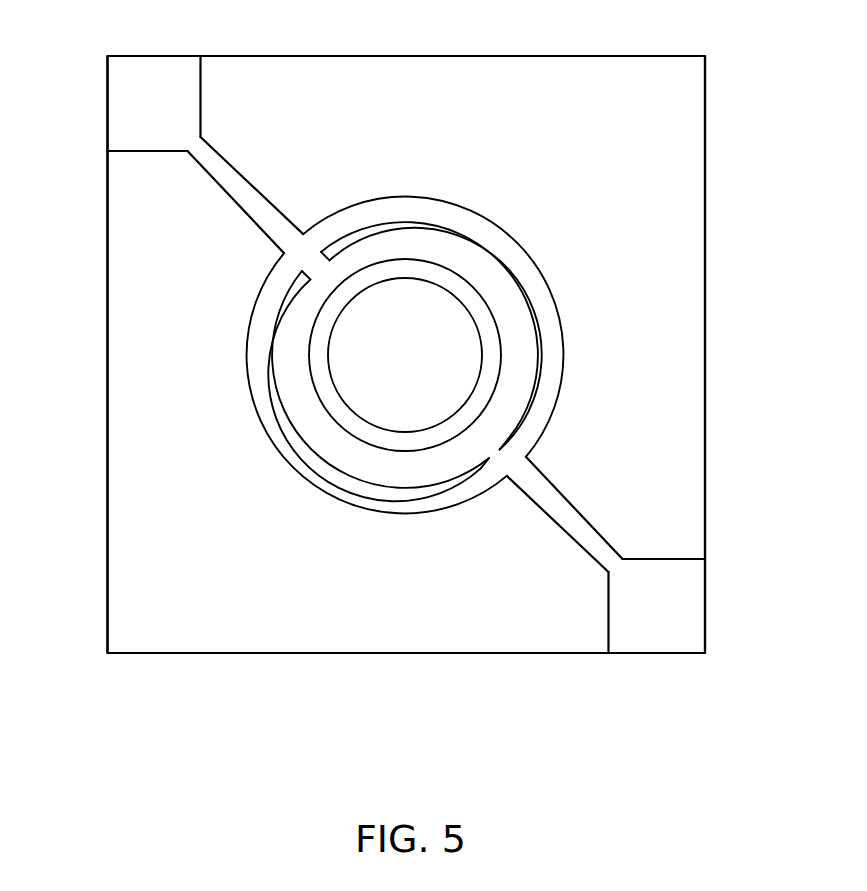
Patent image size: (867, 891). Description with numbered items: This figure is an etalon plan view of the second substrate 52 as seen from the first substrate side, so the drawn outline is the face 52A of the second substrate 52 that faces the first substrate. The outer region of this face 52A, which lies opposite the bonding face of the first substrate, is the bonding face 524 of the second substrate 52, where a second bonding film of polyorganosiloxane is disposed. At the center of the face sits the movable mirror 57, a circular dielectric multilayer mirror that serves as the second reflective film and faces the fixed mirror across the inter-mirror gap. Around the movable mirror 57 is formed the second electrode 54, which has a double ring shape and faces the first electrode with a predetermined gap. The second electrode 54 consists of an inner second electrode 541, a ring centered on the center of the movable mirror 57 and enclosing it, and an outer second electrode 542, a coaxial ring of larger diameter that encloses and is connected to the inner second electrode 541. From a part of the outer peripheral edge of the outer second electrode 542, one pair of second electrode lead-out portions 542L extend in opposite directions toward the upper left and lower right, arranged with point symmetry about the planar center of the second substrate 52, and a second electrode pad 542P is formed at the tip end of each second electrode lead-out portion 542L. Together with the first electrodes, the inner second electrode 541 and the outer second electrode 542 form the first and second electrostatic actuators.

The second substrate 52 is at (705, 233).
The bonding face 524 is at (692, 317).
The face 52A is at (108, 377).
The second electrode 54 is at (405, 323).
The inner second electrode 541 is at (490, 161).
The outer second electrode 542 is at (467, 217).
The second electrode lead-out portion 542L is at (257, 188).
The second electrode pad 542P is at (152, 78).
The movable mirror 57 is at (402, 293).